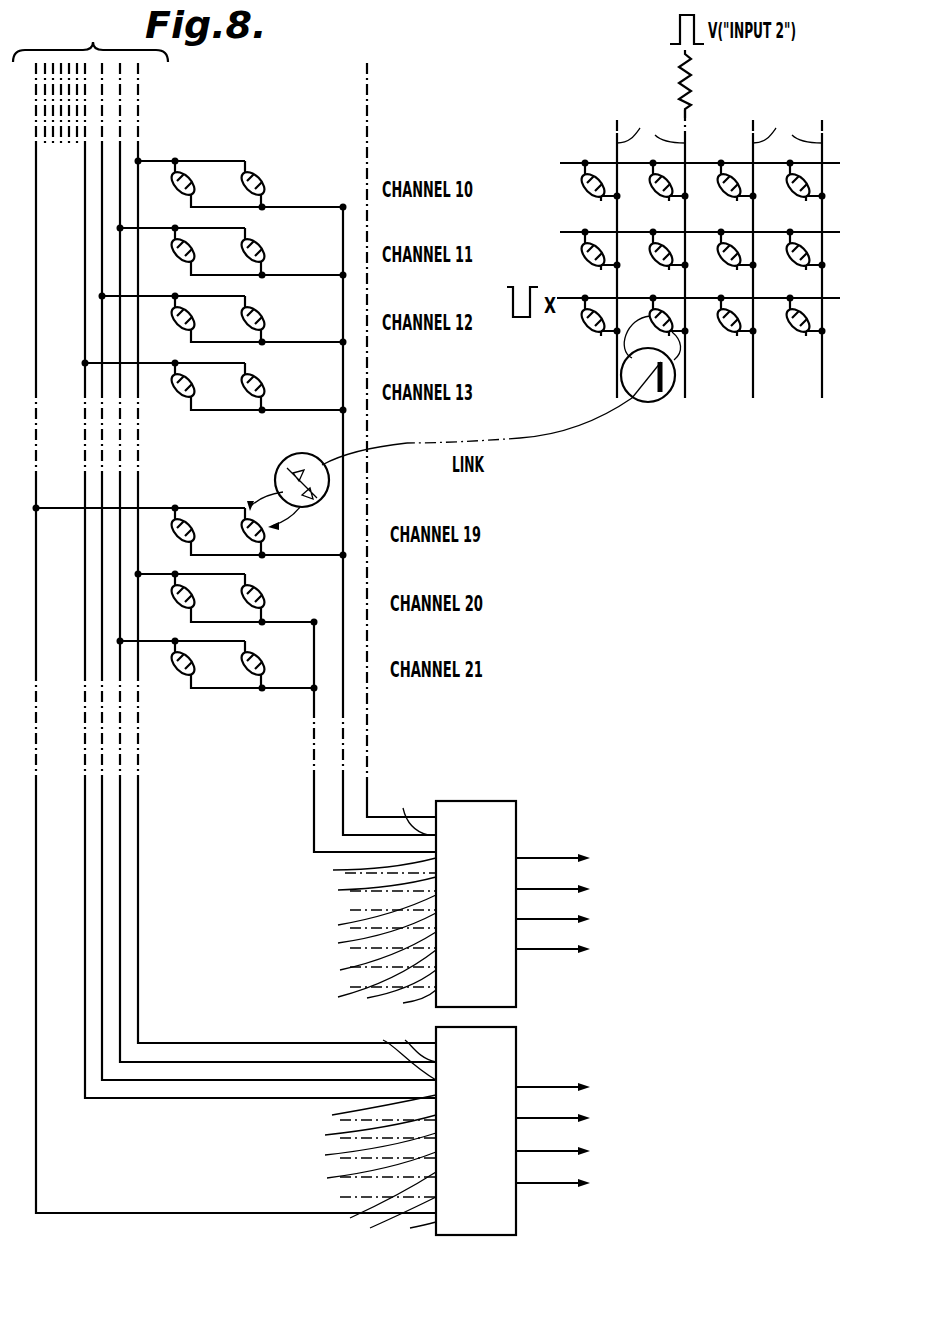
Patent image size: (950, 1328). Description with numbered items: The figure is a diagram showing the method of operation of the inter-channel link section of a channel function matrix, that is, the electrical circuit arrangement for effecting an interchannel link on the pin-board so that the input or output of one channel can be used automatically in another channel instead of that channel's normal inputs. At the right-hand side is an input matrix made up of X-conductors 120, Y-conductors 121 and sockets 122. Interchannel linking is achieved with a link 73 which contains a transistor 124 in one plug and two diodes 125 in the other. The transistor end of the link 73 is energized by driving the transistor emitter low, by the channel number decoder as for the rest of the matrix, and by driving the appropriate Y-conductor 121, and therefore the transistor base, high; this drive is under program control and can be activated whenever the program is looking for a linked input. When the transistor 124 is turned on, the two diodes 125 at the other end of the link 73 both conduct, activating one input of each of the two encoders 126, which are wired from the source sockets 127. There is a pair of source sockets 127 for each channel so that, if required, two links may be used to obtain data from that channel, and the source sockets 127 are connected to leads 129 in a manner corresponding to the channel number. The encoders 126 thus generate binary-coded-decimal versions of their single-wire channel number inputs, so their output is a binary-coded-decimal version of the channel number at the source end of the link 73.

The leads 129 is at (90, 79).
The source sockets 127 is at (198, 184).
The diodes 125 is at (280, 470).
The link 73 is at (580, 430).
The transistor 124 is at (653, 397).
The X-conductors 120 is at (577, 163).
The Y-conductors 121 is at (721, 254).
The sockets 122 is at (582, 186).
The encoders 126 is at (512, 820).